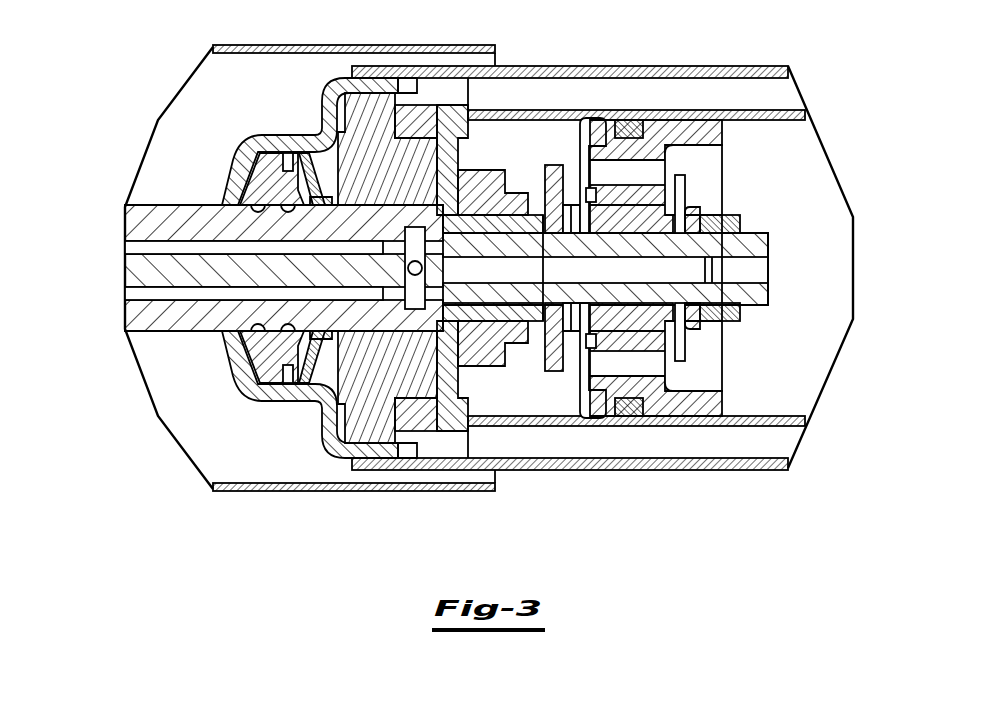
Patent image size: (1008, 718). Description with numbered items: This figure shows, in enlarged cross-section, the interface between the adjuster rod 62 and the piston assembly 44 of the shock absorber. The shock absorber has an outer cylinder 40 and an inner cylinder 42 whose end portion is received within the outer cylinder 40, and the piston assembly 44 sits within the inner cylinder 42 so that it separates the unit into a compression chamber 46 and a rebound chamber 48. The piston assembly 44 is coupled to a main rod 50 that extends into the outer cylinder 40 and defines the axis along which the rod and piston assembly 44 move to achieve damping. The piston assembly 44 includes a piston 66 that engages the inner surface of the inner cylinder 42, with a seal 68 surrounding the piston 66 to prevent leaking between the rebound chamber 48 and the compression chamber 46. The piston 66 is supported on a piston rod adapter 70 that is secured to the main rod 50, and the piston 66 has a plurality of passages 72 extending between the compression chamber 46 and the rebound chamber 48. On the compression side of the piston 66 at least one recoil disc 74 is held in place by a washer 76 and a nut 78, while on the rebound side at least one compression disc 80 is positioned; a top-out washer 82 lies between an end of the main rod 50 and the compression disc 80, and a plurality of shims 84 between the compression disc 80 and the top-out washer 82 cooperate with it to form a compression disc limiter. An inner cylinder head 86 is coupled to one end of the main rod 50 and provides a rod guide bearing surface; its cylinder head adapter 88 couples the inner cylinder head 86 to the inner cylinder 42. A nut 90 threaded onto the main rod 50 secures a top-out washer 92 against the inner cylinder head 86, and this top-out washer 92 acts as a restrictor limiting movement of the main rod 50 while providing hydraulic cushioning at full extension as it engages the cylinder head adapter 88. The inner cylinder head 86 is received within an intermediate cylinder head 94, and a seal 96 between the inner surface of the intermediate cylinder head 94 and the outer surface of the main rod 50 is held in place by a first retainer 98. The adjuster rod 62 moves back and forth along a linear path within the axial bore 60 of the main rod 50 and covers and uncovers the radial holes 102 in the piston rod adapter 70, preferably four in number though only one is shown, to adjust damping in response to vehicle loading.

The outer cylinder 40 is at (317, 493).
The inner cylinder 42 is at (590, 468).
The piston assembly 44 is at (729, 193).
The compression chamber 46 is at (815, 392).
The rebound chamber 48 is at (180, 438).
The main rod 50 is at (124, 228).
The axial bore 60 is at (124, 248).
The adjuster rod 62 is at (124, 290).
The piston 66 is at (724, 136).
The seal 68 is at (630, 416).
The piston rod adapter 70 is at (768, 246).
The passages 72 is at (652, 162).
The recoil disc 74 is at (683, 197).
The washer 76 is at (698, 328).
The nut 78 is at (740, 313).
The compression disc 80 is at (576, 148).
The top-out washer 82 is at (552, 165).
The shims 84 is at (572, 325).
The inner cylinder head 86 is at (376, 432).
The cylinder head adapter 88 is at (453, 430).
The nut 90 is at (498, 358).
The top-out washer 92 is at (452, 158).
The intermediate cylinder head 94 is at (243, 165).
The seal 96 is at (263, 362).
The first retainer 98 is at (316, 370).
The radial holes 102 is at (422, 268).